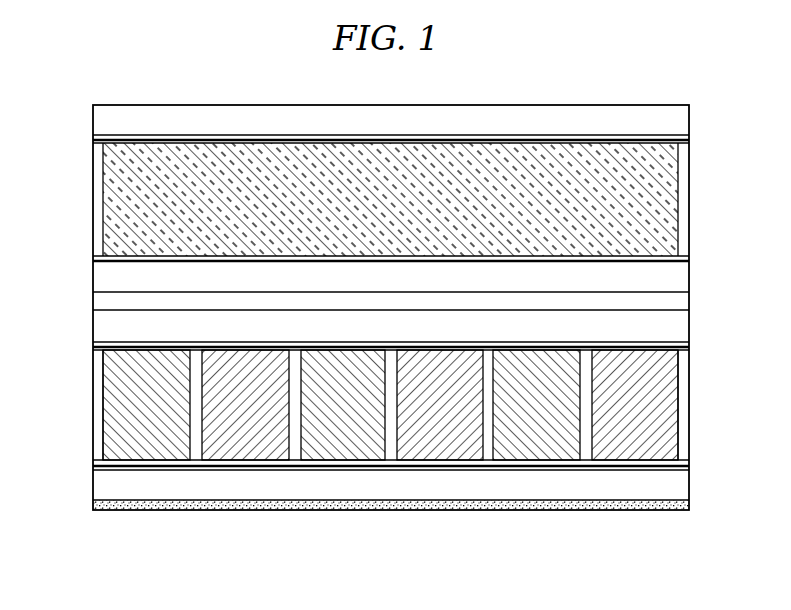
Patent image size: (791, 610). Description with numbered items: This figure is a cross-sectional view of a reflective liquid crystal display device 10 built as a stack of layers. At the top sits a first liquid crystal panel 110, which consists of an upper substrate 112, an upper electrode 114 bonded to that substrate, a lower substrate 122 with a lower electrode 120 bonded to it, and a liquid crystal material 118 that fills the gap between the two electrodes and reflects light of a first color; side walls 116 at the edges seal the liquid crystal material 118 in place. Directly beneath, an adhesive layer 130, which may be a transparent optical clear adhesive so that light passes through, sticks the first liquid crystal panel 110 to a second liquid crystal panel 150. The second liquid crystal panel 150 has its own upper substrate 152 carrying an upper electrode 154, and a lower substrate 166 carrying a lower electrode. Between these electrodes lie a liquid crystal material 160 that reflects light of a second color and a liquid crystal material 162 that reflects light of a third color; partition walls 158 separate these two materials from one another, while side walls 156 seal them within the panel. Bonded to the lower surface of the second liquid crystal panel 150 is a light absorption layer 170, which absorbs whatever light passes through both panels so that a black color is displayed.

The reflective liquid crystal display device 10 is at (373, 582).
The first liquid crystal panel 110 is at (72, 105).
The upper substrate 112 is at (242, 116).
The upper electrode 114 is at (680, 140).
The side walls 116 is at (100, 170).
The liquid crystal material 118 is at (445, 172).
The lower electrode 120 is at (680, 261).
The lower substrate 122 is at (680, 283).
The adhesive layer 130 is at (100, 293).
The second liquid crystal panel 150 is at (72, 310).
The upper substrate 152 is at (680, 328).
The upper electrode 154 is at (678, 347).
The side walls 156 is at (683, 420).
The partition walls 158 is at (586, 447).
The liquid crystal material 160 is at (647, 438).
The liquid crystal material 162 is at (517, 443).
The lower substrate 166 is at (295, 483).
The light absorption layer 170 is at (93, 505).